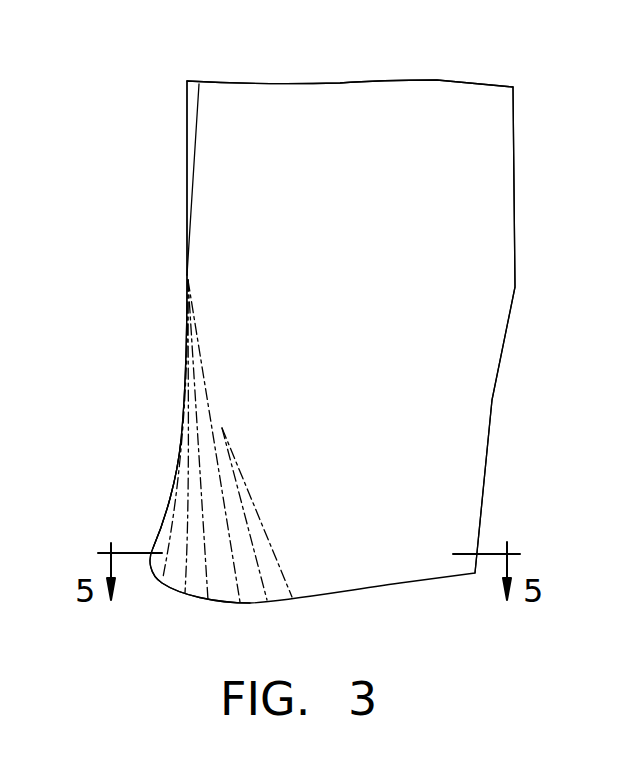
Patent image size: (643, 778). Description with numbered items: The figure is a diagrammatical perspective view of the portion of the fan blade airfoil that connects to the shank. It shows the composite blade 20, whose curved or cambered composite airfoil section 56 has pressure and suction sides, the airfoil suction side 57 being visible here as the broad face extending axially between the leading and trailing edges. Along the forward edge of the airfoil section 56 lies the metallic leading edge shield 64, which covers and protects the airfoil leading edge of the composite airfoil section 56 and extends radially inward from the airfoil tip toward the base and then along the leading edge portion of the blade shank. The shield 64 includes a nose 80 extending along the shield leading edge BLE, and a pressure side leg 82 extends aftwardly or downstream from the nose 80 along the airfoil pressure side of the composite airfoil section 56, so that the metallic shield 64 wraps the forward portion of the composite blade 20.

The composite blade 20 is at (460, 80).
The composite airfoil section 56 is at (353, 83).
The airfoil suction side 57 is at (472, 240).
The shield leading edge BLE is at (186, 195).
The metallic leading edge shield 64 is at (183, 327).
The nose 80 is at (167, 538).
The pressure side leg 82 is at (237, 541).